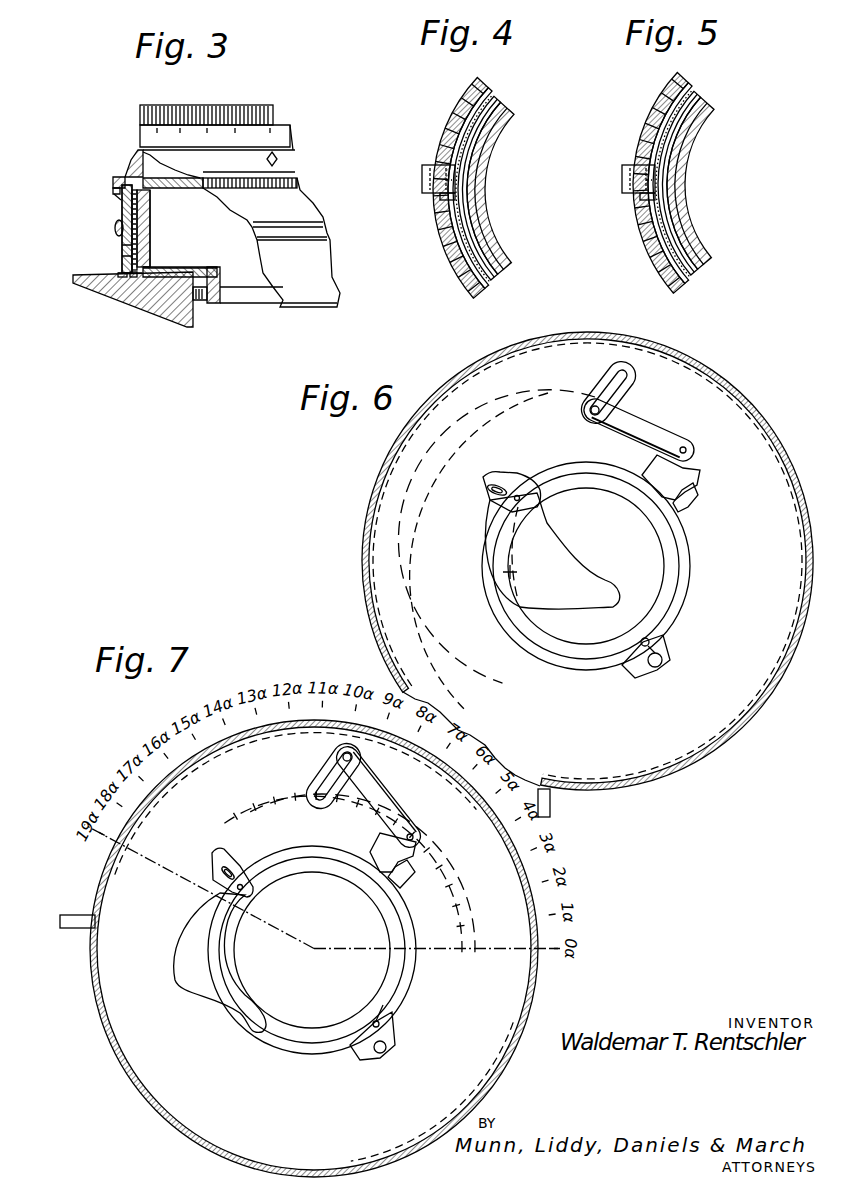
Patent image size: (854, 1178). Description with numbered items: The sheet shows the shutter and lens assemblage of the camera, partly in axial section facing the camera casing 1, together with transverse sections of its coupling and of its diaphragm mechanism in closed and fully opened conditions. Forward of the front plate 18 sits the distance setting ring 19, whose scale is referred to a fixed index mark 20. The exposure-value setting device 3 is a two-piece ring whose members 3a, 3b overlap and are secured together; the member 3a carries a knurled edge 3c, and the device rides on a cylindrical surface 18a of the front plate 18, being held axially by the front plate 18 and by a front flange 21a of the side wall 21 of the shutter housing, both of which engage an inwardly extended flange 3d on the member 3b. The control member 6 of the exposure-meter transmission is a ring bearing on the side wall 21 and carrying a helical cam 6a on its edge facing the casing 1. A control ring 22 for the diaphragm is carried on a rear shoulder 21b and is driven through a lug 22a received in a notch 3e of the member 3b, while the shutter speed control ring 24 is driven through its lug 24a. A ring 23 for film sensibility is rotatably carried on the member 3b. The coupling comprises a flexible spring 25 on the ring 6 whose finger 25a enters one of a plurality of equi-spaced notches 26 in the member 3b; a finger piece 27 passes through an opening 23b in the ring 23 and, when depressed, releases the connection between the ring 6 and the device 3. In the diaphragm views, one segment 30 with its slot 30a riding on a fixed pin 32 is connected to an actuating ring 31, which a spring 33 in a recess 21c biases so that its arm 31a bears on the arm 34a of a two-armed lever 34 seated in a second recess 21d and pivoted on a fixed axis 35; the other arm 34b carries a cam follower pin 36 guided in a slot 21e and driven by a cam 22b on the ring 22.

In FIG. 3, the camera casing 1 is at (80, 288).
In FIG. 3, the exposure-value setting device 3 is at (88, 224).
In FIG. 3, the ring member 3a is at (124, 208).
In FIG. 3, the ring member 3b is at (123, 249).
In FIG. 4, the ring member 3b is at (450, 258).
In FIG. 5, the ring member 3b is at (642, 183).
In FIG. 3, the knurled edge 3c is at (114, 190).
In FIG. 3, the inwardly extended flange 3d is at (118, 198).
In FIG. 3, the notch 3e is at (124, 278).
In FIG. 3, the control member 6 is at (137, 250).
In FIG. 4, the control member 6 is at (500, 108).
In FIG. 5, the control member 6 is at (710, 183).
In FIG. 3, the helical cam 6a is at (135, 278).
In FIG. 3, the front plate 18 is at (135, 158).
In FIG. 3, the cylindrical surface 18a is at (118, 180).
In FIG. 3, the distance setting ring 19 is at (150, 138).
In FIG. 3, the fixed index mark 20 is at (275, 157).
In FIG. 3, the side wall 21 is at (151, 240).
In FIG. 4, the side wall 21 is at (494, 252).
In FIG. 5, the side wall 21 is at (703, 183).
In FIG. 6, the side wall 21 is at (745, 727).
In FIG. 7, the side wall 21 is at (538, 994).
In FIG. 3, the front flange 21a is at (151, 222).
In FIG. 3, the shoulder 21b is at (204, 268).
In FIG. 6, the recess 21c is at (668, 648).
In FIG. 7, the recess 21c is at (355, 1050).
In FIG. 6, the second recess 21d is at (600, 387).
In FIG. 7, the second recess 21d is at (330, 765).
In FIG. 6, the slot 21e is at (623, 420).
In FIG. 7, the slot 21e is at (317, 780).
In FIG. 3, the control ring 22 is at (178, 278).
In FIG. 6, the control ring 22 is at (681, 758).
In FIG. 7, the control ring 22 is at (190, 1128).
In FIG. 3, the lug 22a is at (125, 279).
In FIG. 6, the lug 22a is at (552, 800).
In FIG. 7, the lug 22a is at (78, 929).
In FIG. 6, the cam 22b is at (372, 536).
In FIG. 7, the cam 22b is at (478, 906).
In FIG. 3, the ring 23 is at (115, 229).
In FIG. 4, the ring 23 is at (458, 113).
In FIG. 5, the ring 23 is at (648, 183).
In FIG. 4, the opening 23b is at (443, 200).
In FIG. 5, the opening 23b is at (621, 206).
In FIG. 3, the shutter speed control ring 24 is at (215, 190).
In FIG. 3, the lug 24a is at (182, 188).
In FIG. 4, the flexible spring 25 is at (468, 165).
In FIG. 5, the flexible spring 25 is at (698, 183).
In FIG. 4, the finger 25a is at (462, 207).
In FIG. 5, the finger 25a is at (706, 183).
In FIG. 4, the notches 26 is at (452, 232).
In FIG. 5, the notches 26 is at (642, 183).
In FIG. 4, the finger piece 27 is at (428, 168).
In FIG. 5, the finger piece 27 is at (620, 165).
In FIG. 6, the diaphragm segment 30 is at (510, 572).
In FIG. 7, the diaphragm segment 30 is at (185, 950).
In FIG. 6, the slot 30a is at (488, 486).
In FIG. 7, the slot 30a is at (222, 870).
In FIG. 6, the actuating ring 31 is at (684, 588).
In FIG. 7, the actuating ring 31 is at (414, 970).
In FIG. 6, the arm 31a is at (692, 505).
In FIG. 7, the arm 31a is at (405, 878).
In FIG. 6, the fixed pin 32 is at (490, 494).
In FIG. 7, the fixed pin 32 is at (218, 890).
In FIG. 6, the spring 33 is at (645, 668).
In FIG. 7, the spring 33 is at (388, 1044).
In FIG. 6, the two-armed lever 34 is at (690, 452).
In FIG. 7, the two-armed lever 34 is at (380, 790).
In FIG. 6, the lever arm 34a is at (688, 490).
In FIG. 7, the lever arm 34a is at (378, 845).
In FIG. 6, the lever arm 34b is at (660, 438).
In FIG. 7, the lever arm 34b is at (365, 775).
In FIG. 6, the fixed axis 35 is at (672, 478).
In FIG. 7, the fixed axis 35 is at (415, 835).
In FIG. 6, the cam follower pin 36 is at (592, 407).
In FIG. 7, the cam follower pin 36 is at (352, 753).